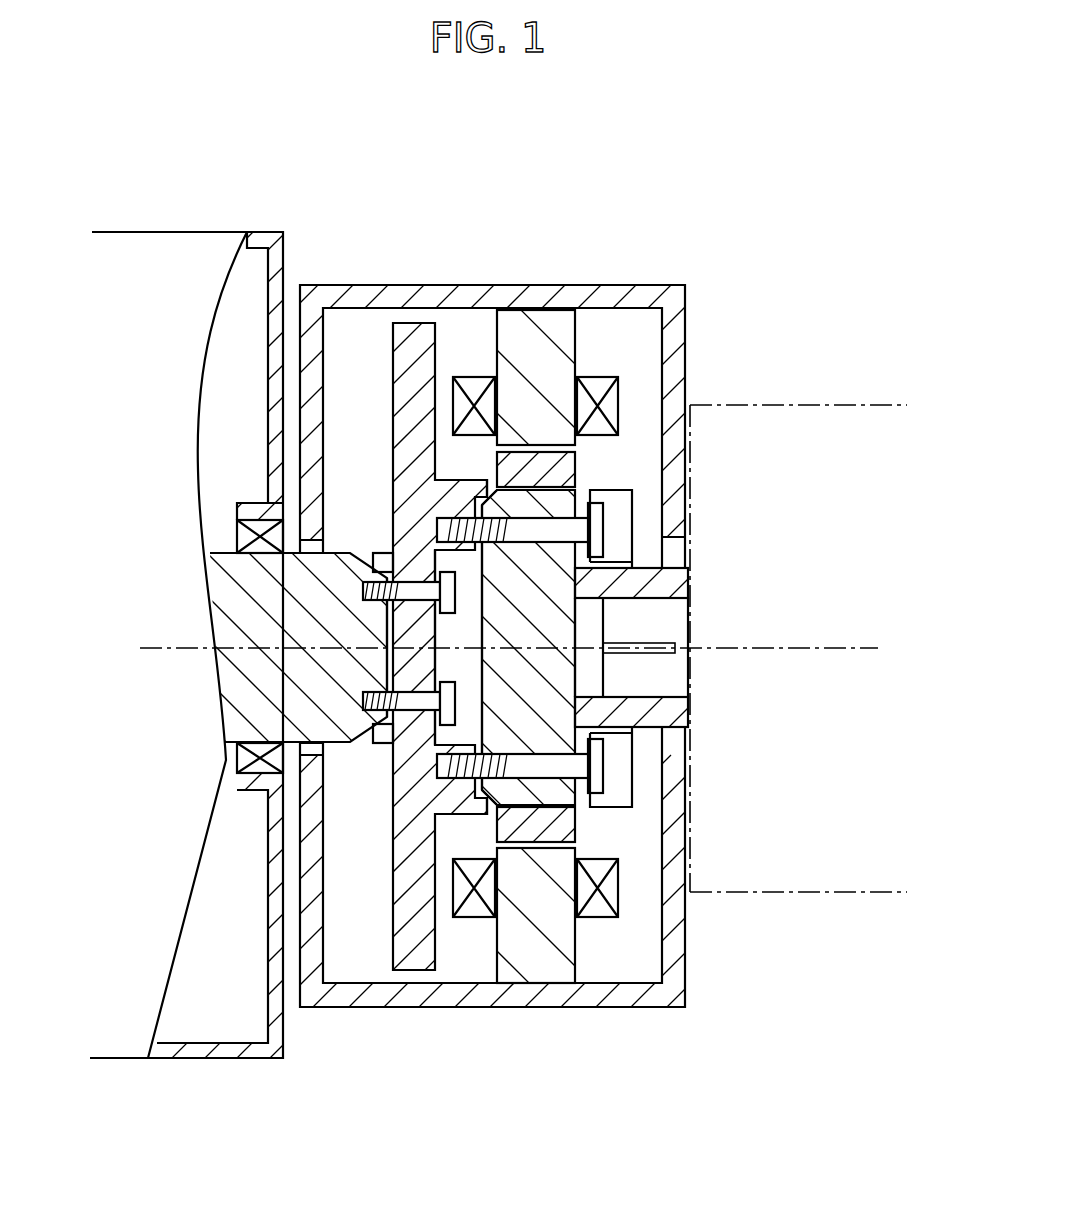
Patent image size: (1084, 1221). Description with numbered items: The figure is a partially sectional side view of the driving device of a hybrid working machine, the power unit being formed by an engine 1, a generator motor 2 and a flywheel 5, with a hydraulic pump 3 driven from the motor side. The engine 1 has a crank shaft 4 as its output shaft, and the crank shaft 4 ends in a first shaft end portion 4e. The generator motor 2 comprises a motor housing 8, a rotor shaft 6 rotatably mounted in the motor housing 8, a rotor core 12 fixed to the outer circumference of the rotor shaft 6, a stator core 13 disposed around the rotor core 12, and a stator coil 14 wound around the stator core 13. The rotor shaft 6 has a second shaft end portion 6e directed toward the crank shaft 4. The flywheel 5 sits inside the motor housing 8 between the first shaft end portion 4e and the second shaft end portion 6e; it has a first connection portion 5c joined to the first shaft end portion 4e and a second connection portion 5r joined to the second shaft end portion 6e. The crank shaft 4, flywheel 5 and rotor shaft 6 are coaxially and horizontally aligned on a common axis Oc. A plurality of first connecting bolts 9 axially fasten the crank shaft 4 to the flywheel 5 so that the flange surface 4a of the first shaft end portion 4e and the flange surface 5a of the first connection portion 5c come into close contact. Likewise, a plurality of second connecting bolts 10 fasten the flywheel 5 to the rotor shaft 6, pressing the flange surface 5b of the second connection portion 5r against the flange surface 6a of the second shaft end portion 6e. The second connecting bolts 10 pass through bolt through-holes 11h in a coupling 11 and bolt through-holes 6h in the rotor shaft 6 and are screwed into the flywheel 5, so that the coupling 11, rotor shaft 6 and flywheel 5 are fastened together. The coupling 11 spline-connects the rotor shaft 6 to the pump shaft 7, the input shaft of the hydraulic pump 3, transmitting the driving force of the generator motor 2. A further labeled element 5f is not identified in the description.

The engine 1 is at (130, 220).
The generator motor 2 is at (492, 266).
The hydraulic pump 3 is at (843, 396).
The crank shaft 4 is at (228, 607).
The flange surface 4a is at (385, 653).
The first shaft end portion 4e is at (355, 546).
The flywheel 5 is at (408, 975).
The flange surface 5a is at (392, 607).
The flange surface 5b is at (440, 628).
The first connection portion 5c is at (382, 752).
The rotor face 5f is at (585, 672).
The second connection portion 5r is at (470, 468).
The rotor shaft 6 is at (527, 843).
The flange surface 6a is at (483, 658).
The second shaft end portion 6e is at (487, 815).
The bolt through-holes 6h is at (580, 492).
The pump shaft 7 is at (645, 608).
The motor housing 8 is at (576, 1008).
The first connecting bolts 9 is at (457, 592).
The second connecting bolts 10 is at (606, 545).
The coupling 11 is at (690, 710).
The bolt through-holes 11h is at (603, 520).
The rotor core 12 is at (577, 470).
The stator core 13 is at (541, 322).
The stator coil 14 is at (598, 375).
The common axis Oc is at (531, 648).